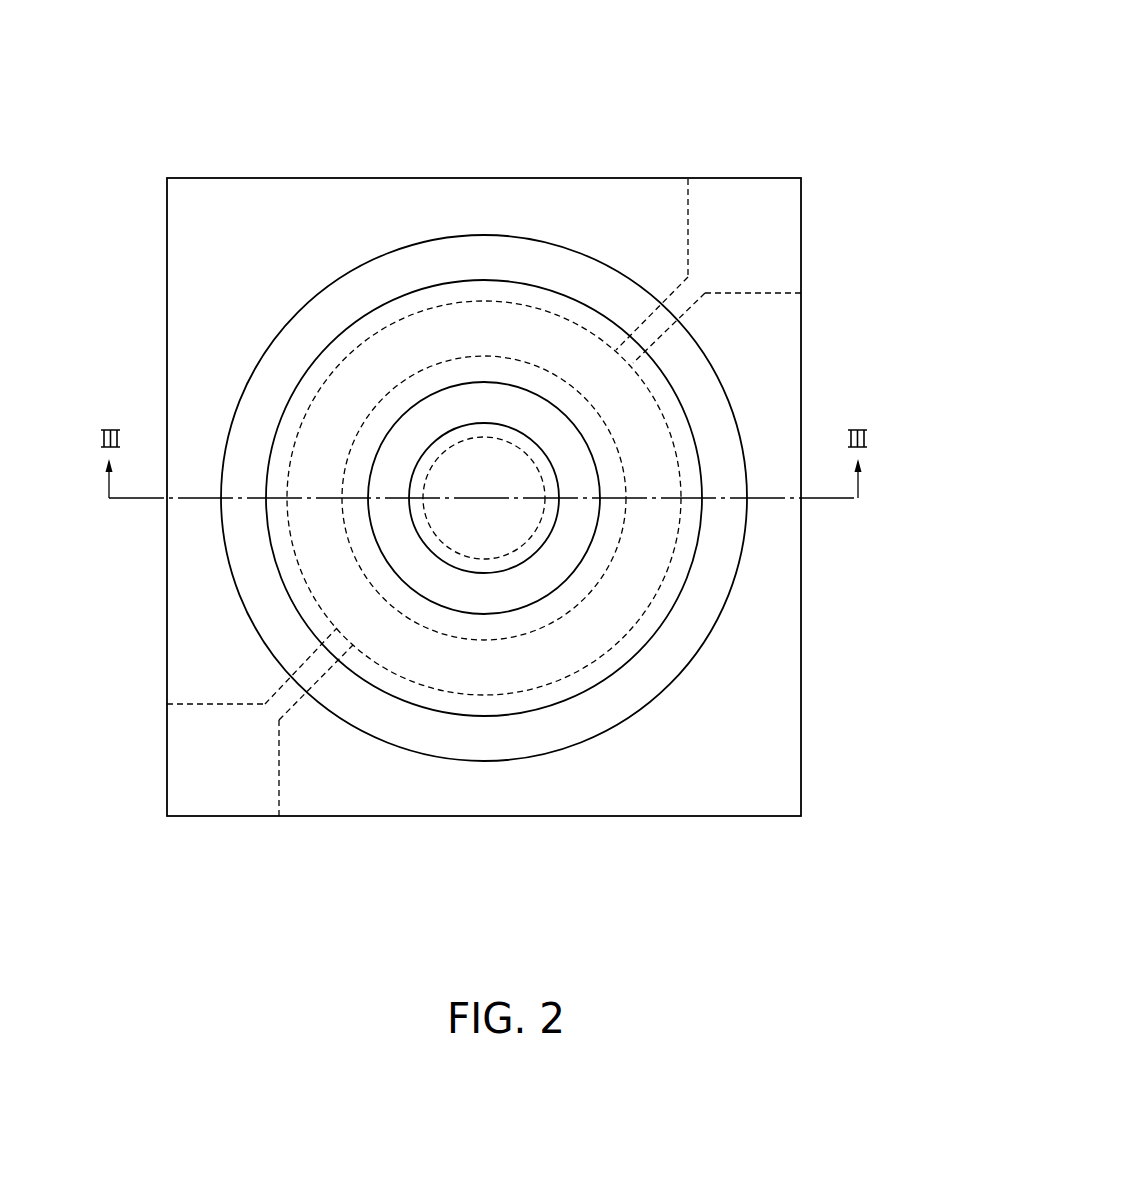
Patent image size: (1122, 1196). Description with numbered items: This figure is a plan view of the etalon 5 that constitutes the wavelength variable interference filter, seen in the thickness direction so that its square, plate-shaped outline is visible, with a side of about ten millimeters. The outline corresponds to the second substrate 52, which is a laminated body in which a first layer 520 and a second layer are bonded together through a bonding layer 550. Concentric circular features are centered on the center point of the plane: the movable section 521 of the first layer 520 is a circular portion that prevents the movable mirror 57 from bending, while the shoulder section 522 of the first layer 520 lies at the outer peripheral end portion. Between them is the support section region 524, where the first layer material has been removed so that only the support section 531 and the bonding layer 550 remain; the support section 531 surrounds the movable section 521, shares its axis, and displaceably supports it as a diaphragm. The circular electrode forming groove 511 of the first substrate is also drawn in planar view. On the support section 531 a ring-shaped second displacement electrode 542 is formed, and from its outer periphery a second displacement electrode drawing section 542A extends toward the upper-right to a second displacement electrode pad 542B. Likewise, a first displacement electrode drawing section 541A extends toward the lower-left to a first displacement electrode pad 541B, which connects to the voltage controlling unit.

The etalon 5 is at (698, 73).
The second substrate 52 is at (802, 658).
The movable mirror 57 is at (507, 518).
The electrode forming groove 511 is at (704, 564).
The first layer 520 is at (863, 306).
The movable section 521 is at (562, 443).
The shoulder section 522 is at (782, 377).
The support section region 524 is at (493, 672).
The support section 531 is at (592, 672).
The first displacement electrode drawing section 541A is at (290, 698).
The first displacement electrode pad 541B is at (223, 800).
The second displacement electrode 542 is at (590, 630).
The second displacement electrode drawing section 542A is at (674, 303).
The second displacement electrode pad 542B is at (745, 190).
The bonding layer 550 is at (557, 693).